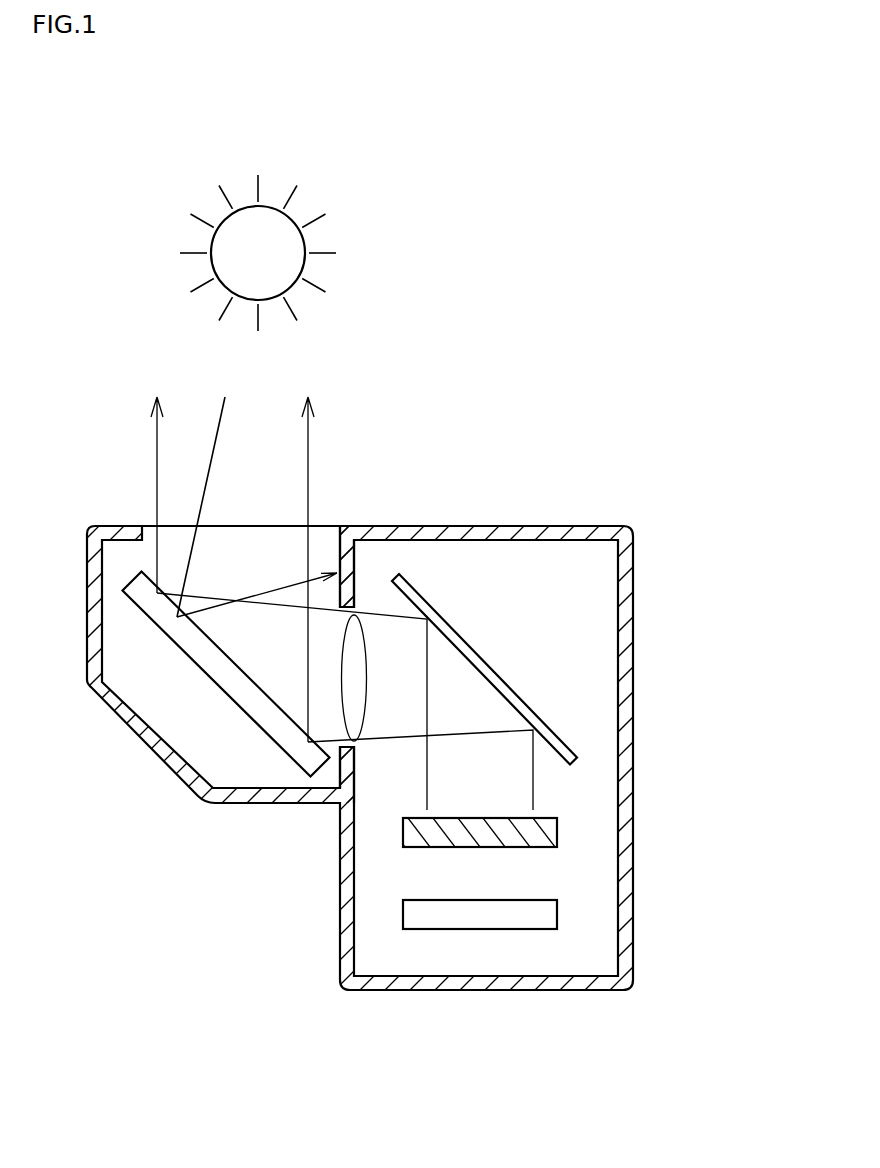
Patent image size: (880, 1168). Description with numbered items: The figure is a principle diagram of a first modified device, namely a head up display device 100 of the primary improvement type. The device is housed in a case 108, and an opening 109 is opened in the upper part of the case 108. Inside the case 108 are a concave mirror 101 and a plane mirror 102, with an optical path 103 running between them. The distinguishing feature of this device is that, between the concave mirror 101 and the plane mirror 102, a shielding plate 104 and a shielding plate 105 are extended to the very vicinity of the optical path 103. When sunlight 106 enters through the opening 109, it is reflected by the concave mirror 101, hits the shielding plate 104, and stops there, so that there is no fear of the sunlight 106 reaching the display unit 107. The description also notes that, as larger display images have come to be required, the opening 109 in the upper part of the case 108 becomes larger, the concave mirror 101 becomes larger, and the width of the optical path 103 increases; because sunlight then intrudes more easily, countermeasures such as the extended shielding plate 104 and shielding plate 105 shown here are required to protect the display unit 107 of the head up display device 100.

The head up display device 100 is at (624, 485).
The concave mirror 101 is at (207, 677).
The plane mirror 102 is at (488, 662).
The optical path 103 is at (360, 668).
The shielding plate 104 is at (339, 556).
The shielding plate 105 is at (338, 768).
The sunlight 106 is at (214, 458).
The display unit 107 is at (557, 830).
The case 108 is at (637, 580).
The opening 109 is at (150, 525).